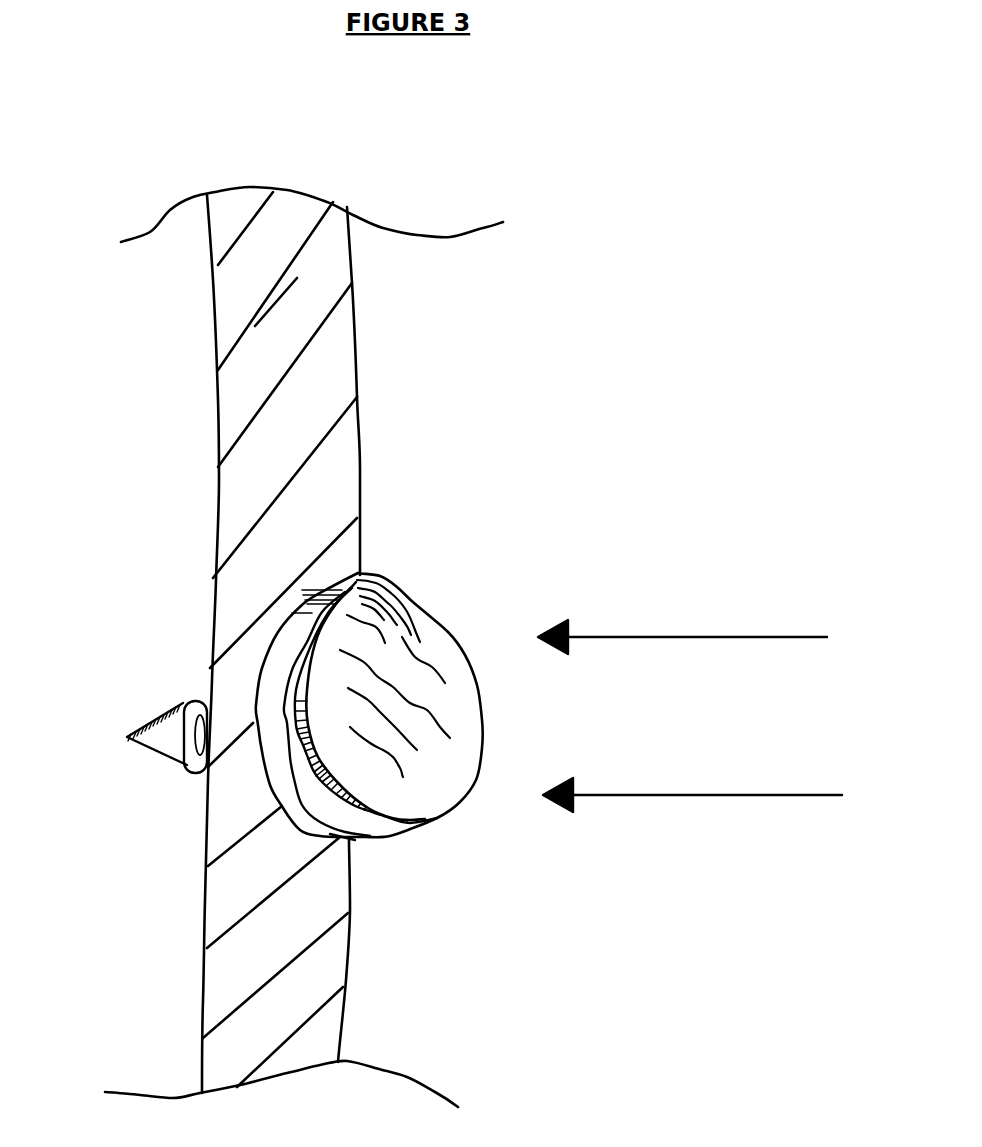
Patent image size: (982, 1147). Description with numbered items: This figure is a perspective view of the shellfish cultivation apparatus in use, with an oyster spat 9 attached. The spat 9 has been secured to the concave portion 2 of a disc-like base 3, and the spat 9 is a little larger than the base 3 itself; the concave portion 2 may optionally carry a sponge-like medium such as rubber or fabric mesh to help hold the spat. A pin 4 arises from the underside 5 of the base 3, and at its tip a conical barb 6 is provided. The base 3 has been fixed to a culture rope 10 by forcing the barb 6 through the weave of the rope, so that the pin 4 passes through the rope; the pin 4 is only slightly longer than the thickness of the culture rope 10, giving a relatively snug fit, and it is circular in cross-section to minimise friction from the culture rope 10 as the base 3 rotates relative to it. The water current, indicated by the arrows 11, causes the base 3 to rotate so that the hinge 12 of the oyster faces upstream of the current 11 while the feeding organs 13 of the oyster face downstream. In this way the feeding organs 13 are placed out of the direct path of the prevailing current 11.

The concave portion 2 is at (342, 838).
The base 3 is at (278, 668).
The pin 4 is at (180, 708).
The underside 5 is at (263, 773).
The conical barb 6 is at (148, 755).
The oyster spat 9 is at (440, 645).
The culture rope 10 is at (218, 417).
The current 11 is at (745, 873).
The hinge 12 is at (387, 588).
The feeding organs 13 is at (390, 826).